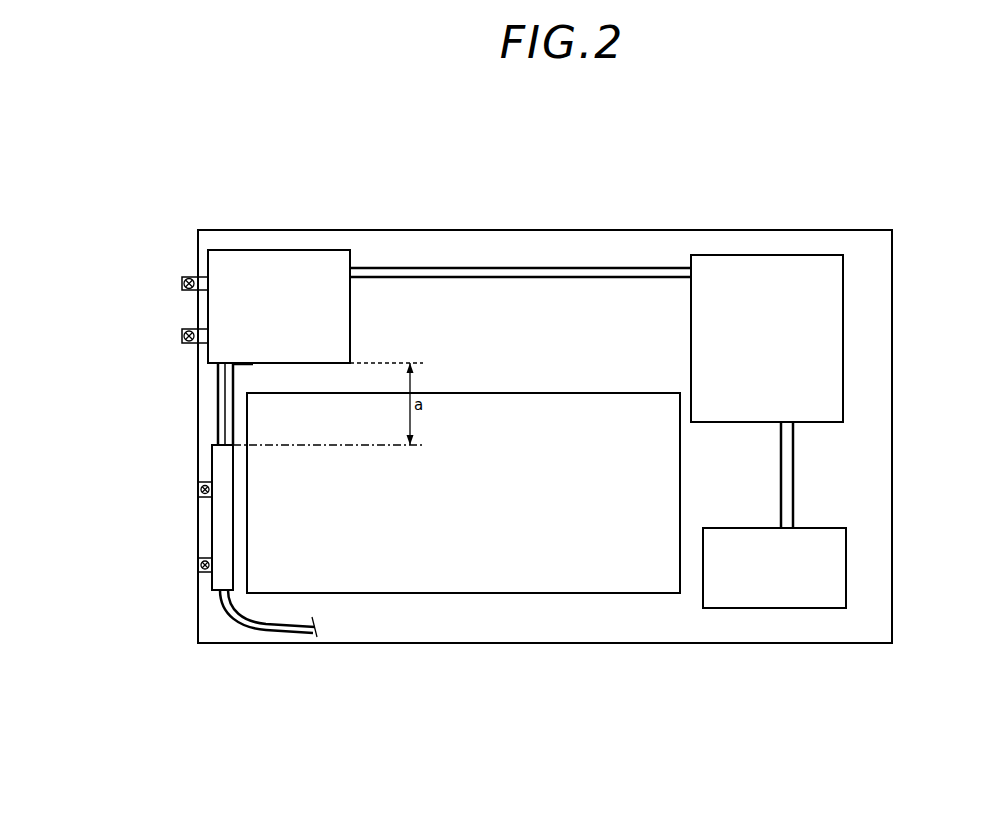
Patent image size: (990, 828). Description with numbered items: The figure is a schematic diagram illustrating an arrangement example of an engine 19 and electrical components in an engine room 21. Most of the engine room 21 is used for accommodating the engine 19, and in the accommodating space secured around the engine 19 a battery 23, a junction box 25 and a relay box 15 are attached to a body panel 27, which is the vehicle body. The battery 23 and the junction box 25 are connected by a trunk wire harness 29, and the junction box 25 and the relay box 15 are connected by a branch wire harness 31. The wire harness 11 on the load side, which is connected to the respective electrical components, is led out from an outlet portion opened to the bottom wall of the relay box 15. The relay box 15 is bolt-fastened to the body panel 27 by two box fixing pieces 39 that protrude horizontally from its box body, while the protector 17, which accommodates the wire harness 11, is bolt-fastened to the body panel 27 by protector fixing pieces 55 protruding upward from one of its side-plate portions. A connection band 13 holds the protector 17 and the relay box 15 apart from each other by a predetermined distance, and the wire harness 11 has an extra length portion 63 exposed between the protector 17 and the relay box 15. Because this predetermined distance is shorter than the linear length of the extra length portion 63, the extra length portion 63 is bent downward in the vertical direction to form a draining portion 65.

The wire harness 11 is at (272, 638).
The connection band 13 is at (242, 422).
The relay box 15 is at (297, 247).
The protector 17 is at (242, 541).
The engine 19 is at (501, 603).
The engine room 21 is at (493, 320).
The battery 23 is at (838, 518).
The junction box 25 is at (848, 286).
The body panel 27 is at (212, 622).
The trunk wire harness 29 is at (793, 457).
The branch wire harness 31 is at (593, 275).
The box fixing piece 39 is at (183, 337).
The protector fixing piece 55 is at (198, 507).
The extra length portion 63 is at (218, 433).
The draining portion 65 is at (210, 403).